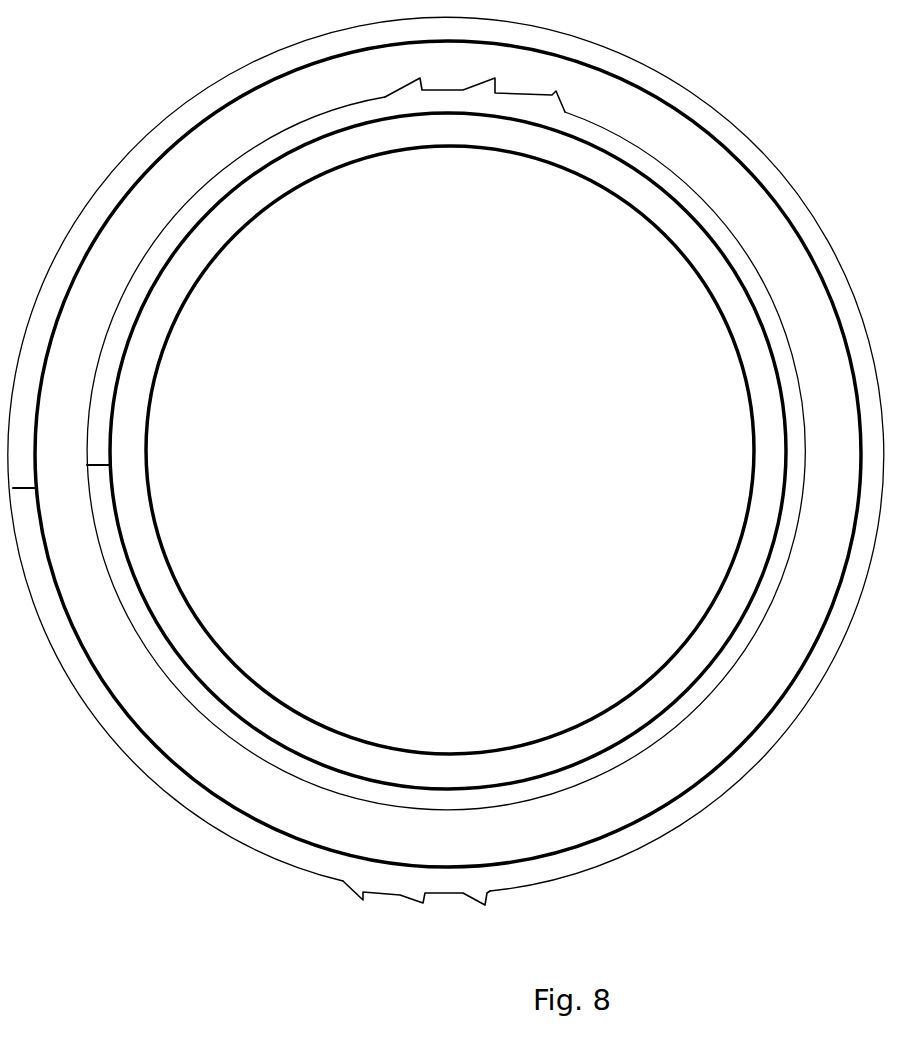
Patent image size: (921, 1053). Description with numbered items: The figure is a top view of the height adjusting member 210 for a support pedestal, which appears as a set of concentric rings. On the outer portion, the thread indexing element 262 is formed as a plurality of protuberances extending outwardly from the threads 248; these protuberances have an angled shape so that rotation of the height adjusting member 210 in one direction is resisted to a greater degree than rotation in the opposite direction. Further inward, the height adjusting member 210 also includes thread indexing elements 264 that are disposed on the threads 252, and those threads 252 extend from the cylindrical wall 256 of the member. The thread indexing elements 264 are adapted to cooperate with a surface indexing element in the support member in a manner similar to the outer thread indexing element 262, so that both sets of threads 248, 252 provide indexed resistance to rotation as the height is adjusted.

The height adjusting member 210 is at (191, 76).
The threads 248 is at (593, 857).
The threads 252 is at (718, 213).
The cylindrical wall 256 is at (640, 168).
The thread indexing element 262 is at (422, 903).
The thread indexing elements 264 is at (493, 77).